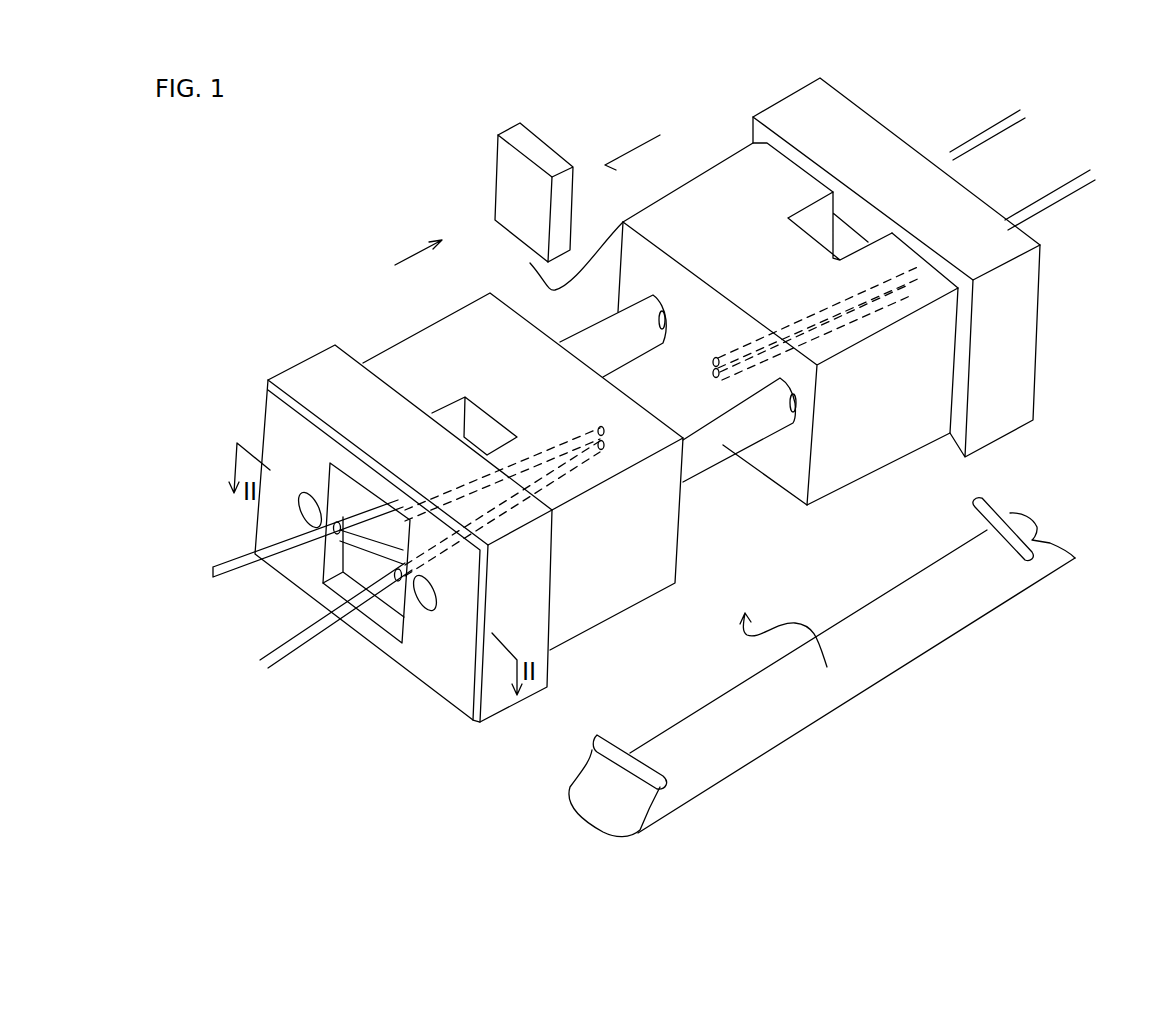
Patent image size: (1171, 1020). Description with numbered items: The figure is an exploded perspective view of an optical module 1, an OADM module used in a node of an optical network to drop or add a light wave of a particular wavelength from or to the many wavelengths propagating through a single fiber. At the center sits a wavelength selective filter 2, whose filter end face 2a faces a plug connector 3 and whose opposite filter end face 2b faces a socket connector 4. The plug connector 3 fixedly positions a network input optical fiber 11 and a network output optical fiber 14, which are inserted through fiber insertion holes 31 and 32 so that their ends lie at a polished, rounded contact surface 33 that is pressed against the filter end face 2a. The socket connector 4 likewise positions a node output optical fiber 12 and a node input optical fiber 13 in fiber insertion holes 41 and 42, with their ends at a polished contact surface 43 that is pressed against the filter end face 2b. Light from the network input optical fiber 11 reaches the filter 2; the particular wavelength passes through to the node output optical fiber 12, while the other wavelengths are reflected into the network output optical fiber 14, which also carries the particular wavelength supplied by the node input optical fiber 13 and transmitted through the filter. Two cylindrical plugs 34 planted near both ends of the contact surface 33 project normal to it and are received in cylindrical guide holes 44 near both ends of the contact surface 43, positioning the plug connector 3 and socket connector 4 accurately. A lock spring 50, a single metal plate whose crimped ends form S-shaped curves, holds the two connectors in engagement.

The optical module 1 is at (426, 128).
The wavelength selective filter 2 is at (530, 130).
The filter end face 2a is at (505, 178).
The filter end face 2b is at (578, 190).
The plug connector 3 is at (400, 355).
The socket connector 4 is at (720, 311).
The network input optical fiber 11 is at (218, 560).
The node output optical fiber 12 is at (1060, 193).
The node input optical fiber 13 is at (955, 148).
The network output optical fiber 14 is at (318, 645).
The fiber insertion hole 31 is at (272, 472).
The fiber insertion hole 32 is at (445, 542).
The contact surface 33 is at (684, 525).
The plugs 34 is at (580, 340).
The fiber insertion hole 41 is at (977, 297).
The fiber insertion hole 42 is at (803, 287).
The contact surface 43 is at (812, 393).
The guide holes 44 is at (662, 343).
The lock spring 50 is at (1060, 545).